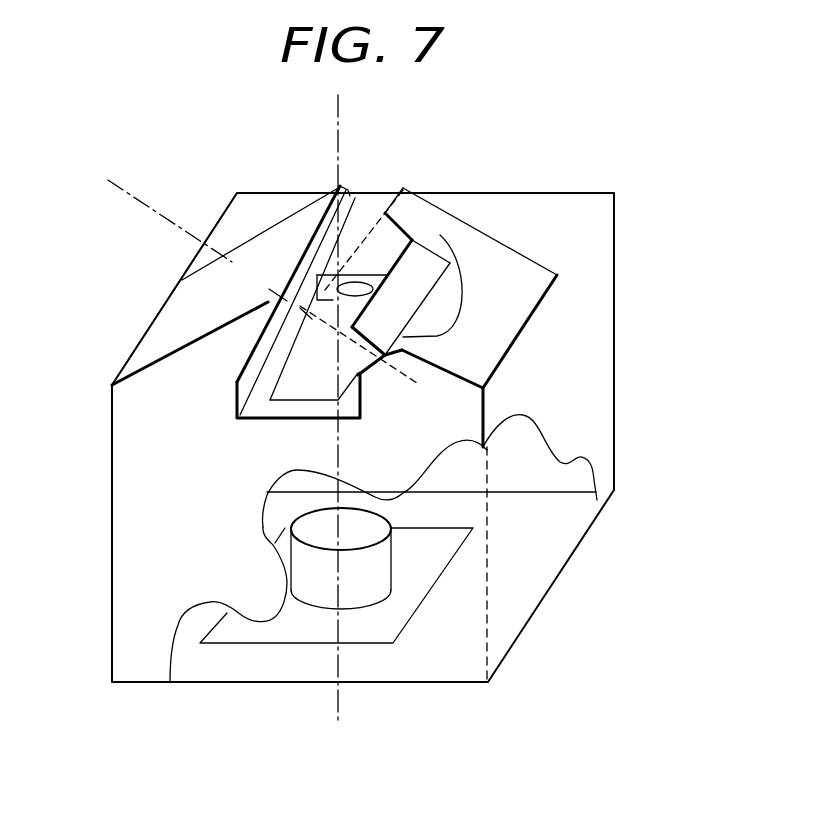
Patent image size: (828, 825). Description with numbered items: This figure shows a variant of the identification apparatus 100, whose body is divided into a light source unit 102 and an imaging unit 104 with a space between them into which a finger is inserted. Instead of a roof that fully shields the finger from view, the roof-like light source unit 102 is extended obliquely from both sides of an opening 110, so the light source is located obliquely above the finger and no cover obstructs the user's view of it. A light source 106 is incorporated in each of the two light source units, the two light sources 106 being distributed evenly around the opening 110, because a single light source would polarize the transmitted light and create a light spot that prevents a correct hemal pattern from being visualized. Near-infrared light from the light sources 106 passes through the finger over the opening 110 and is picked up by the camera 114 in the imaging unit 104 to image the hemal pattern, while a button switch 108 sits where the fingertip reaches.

The identification apparatus 100 is at (615, 333).
The light source unit 102 is at (171, 322).
The imaging unit 104 is at (125, 511).
The light source 106 is at (317, 280).
The button switch 108 is at (367, 275).
The opening 110 is at (306, 397).
The camera 114 is at (405, 624).